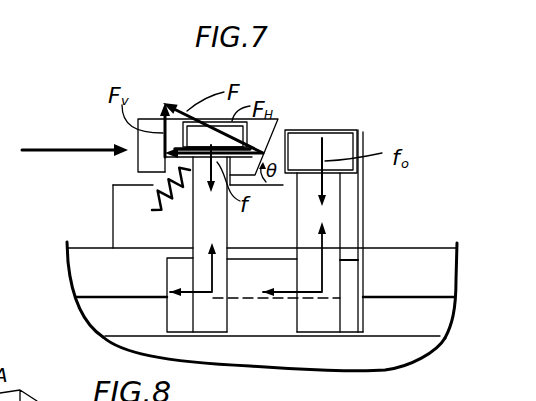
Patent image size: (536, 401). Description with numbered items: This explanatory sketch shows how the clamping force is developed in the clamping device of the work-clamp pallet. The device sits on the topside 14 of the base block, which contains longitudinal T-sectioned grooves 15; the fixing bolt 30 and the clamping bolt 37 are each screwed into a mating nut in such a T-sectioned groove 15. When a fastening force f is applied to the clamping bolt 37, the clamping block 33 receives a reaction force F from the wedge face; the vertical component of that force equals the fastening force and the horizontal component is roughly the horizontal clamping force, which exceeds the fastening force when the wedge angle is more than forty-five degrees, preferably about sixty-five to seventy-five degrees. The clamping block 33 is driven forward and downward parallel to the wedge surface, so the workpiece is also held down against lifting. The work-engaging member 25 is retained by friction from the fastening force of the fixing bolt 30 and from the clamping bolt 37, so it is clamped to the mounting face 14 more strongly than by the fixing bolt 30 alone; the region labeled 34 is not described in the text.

The topside 14 is at (393, 250).
The T-sectioned groove 15 is at (412, 336).
The work-engaging member 25 is at (283, 218).
The fixing bolt 30 is at (332, 271).
The clamping block 33 is at (147, 158).
The chamber 34 is at (290, 352).
The clamping bolt 37 is at (197, 223).